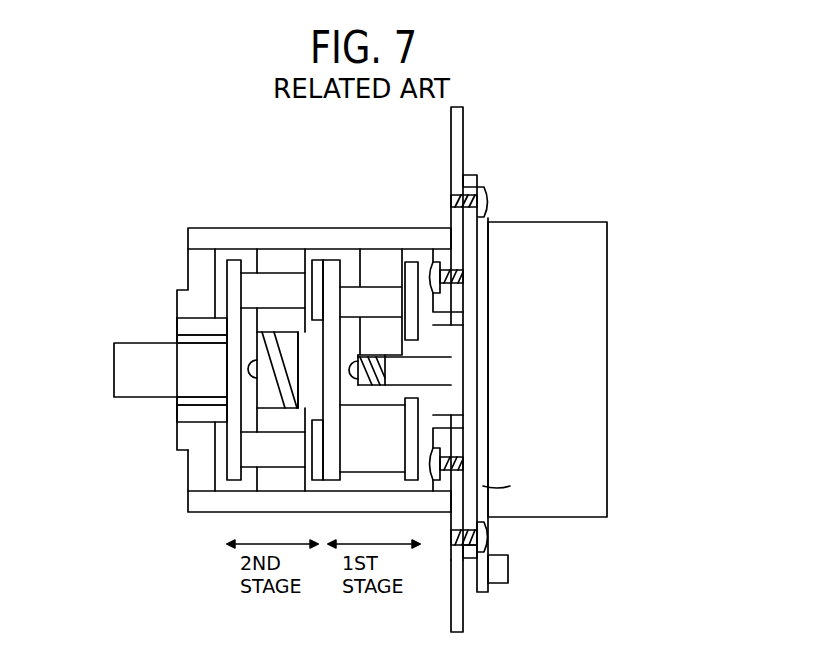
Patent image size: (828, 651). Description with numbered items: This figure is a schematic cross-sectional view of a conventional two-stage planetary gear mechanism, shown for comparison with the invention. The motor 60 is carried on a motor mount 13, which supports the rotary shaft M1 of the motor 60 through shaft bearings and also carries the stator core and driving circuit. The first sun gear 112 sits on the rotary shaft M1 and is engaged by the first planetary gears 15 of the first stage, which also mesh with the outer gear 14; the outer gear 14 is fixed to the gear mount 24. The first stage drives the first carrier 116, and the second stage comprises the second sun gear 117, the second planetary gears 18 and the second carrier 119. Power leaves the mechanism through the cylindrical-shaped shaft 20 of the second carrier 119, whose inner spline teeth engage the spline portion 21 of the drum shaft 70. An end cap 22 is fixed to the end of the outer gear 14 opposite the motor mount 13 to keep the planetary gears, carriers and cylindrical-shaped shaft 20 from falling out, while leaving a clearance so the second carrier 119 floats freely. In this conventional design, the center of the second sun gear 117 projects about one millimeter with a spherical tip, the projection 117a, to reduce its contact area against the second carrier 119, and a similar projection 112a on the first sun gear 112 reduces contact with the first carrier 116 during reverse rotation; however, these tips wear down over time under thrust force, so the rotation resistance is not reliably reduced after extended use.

The motor mount 13 is at (470, 438).
The outer gear 14 is at (272, 240).
The first planetary gears 15 is at (390, 260).
The second planetary gears 18 is at (263, 318).
The cylindrical-shaped shaft 20 is at (181, 330).
The spline portion 21 is at (178, 340).
The end cap 22 is at (183, 452).
The gear mount 24 is at (463, 612).
The motor 60 is at (607, 250).
The drum shaft 70 is at (113, 370).
The first sun gear 112 is at (407, 365).
The projection 112a is at (350, 362).
The first carrier 116 is at (333, 268).
The second sun gear 117 is at (262, 397).
The projection 117a is at (248, 366).
The second carrier 119 is at (232, 436).
The rotary shaft M1 is at (446, 370).